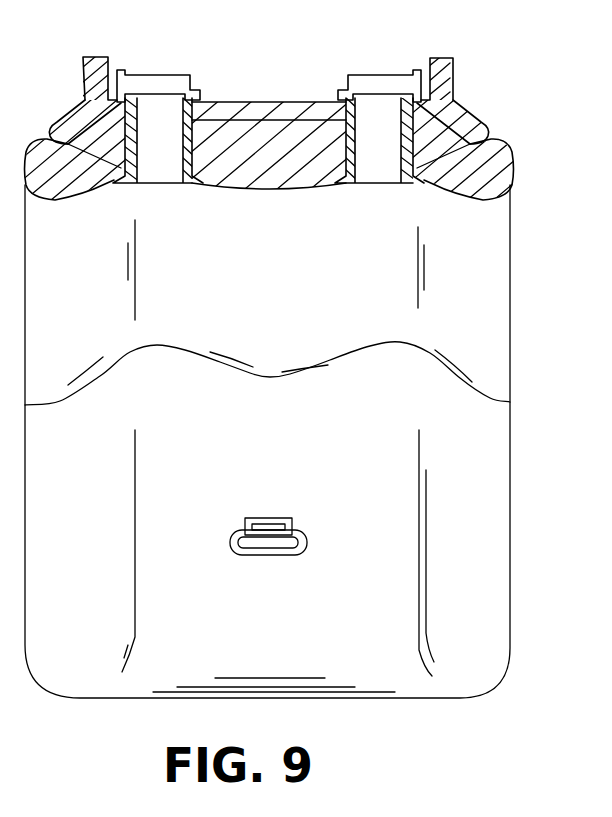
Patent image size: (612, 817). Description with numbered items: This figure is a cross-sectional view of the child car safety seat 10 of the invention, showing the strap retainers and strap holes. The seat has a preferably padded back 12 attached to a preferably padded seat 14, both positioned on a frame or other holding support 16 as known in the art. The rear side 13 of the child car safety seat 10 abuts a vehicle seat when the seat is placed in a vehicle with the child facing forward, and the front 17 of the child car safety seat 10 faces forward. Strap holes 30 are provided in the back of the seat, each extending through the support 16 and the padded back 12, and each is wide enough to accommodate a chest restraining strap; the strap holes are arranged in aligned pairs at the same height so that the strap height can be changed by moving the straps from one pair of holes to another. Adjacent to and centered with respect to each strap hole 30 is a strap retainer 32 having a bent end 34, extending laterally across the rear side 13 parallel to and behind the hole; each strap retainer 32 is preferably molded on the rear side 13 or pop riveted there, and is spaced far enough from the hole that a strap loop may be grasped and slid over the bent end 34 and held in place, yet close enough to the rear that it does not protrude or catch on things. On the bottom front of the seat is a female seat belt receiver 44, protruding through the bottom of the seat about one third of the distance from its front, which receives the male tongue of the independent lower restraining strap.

The child car safety seat 10 is at (540, 191).
The padded back 12 is at (265, 378).
The rear side 13 is at (286, 102).
The padded seat 14 is at (217, 467).
The frame or holding support 16 is at (453, 105).
The front 17 is at (138, 698).
The strap holes 30 is at (172, 184).
The strap retainer 32 is at (166, 76).
The bent end 34 is at (123, 69).
The receiver 44 is at (280, 545).